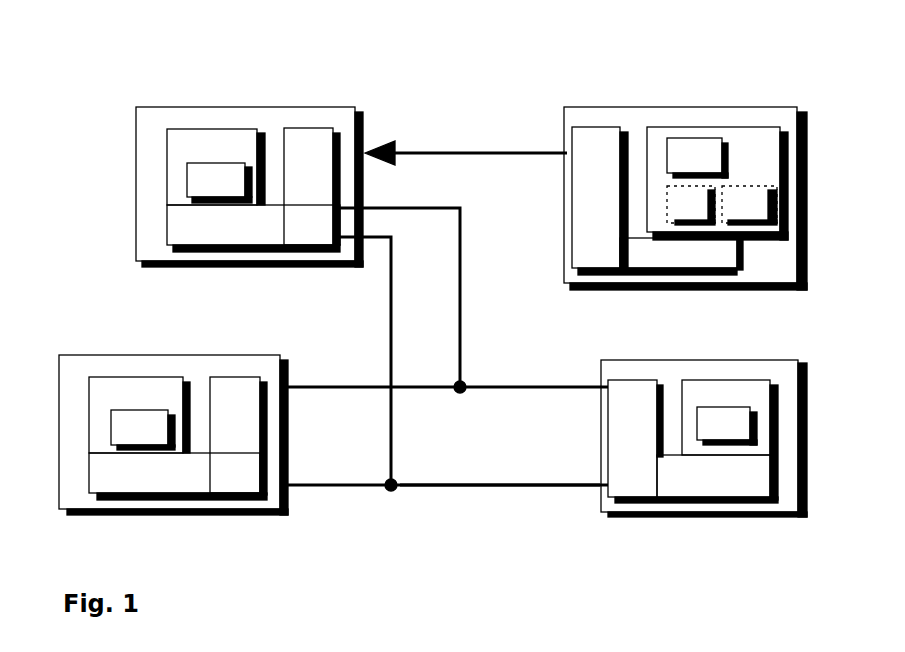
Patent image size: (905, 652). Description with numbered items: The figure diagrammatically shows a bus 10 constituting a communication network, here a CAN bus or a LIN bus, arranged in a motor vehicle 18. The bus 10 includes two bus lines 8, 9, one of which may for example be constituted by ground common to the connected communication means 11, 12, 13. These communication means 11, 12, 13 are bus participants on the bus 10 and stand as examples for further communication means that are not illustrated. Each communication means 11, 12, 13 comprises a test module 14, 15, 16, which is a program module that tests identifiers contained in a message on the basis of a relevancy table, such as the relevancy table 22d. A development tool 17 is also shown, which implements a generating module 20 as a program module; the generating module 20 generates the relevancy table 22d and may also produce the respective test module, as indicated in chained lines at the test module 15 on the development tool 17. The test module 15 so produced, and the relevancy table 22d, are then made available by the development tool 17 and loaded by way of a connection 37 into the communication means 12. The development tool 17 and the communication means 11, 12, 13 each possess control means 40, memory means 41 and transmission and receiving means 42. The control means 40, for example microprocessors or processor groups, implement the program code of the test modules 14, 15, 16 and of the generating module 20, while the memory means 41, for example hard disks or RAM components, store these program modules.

The motor vehicle 18 is at (67, 90).
The communication means 12 is at (241, 147).
The communication means 11 is at (164, 395).
The communication means 13 is at (704, 479).
The development tool 17 is at (685, 154).
The test module 14 is at (162, 376).
The test module 15 is at (480, 189).
The test module 16 is at (708, 375).
The generating module 20 is at (675, 115).
The relevancy table 22d is at (774, 140).
The connection 37 is at (466, 135).
The control means 40 is at (429, 379).
The memory means 41 is at (438, 287).
The transmission and receiving means 42 is at (494, 289).
The bus line 8 is at (448, 317).
The bus line 9 is at (448, 364).
The bus 10 is at (496, 517).